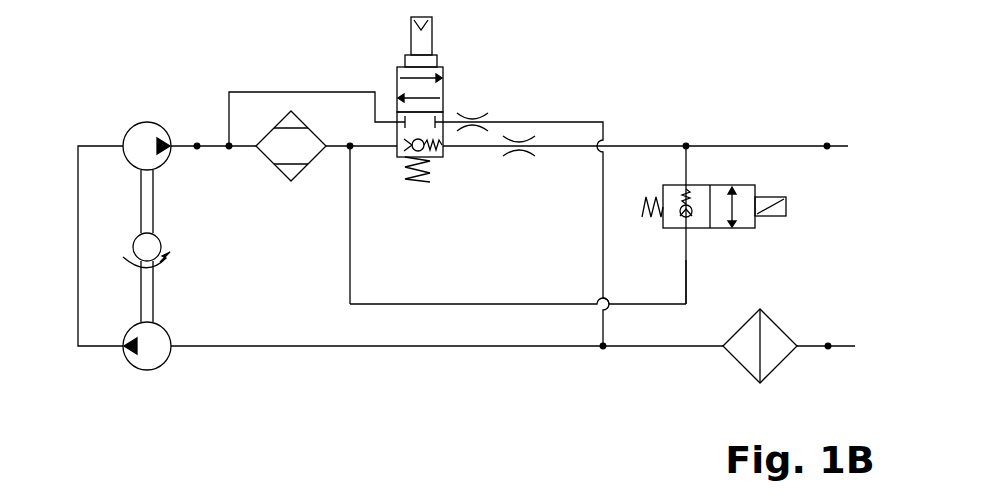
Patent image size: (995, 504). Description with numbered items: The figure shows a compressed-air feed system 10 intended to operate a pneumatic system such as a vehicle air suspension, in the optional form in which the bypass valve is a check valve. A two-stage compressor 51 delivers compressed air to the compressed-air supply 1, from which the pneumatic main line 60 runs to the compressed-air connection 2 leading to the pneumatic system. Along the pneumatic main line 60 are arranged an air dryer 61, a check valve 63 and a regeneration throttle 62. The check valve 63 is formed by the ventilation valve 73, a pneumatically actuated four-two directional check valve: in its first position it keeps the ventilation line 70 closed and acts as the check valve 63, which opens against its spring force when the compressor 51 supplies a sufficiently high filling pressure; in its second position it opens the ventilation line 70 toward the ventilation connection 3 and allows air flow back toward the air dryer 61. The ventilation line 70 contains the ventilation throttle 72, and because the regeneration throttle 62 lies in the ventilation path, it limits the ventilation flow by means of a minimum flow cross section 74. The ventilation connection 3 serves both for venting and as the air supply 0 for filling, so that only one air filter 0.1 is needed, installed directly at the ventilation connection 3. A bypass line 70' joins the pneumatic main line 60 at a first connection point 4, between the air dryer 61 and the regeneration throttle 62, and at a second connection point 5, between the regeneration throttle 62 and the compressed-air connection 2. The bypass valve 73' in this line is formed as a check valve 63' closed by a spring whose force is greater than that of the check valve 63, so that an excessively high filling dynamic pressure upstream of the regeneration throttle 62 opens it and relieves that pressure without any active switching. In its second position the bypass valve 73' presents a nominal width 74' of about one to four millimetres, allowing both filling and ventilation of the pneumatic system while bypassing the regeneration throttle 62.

The compressed-air feed system 10 is at (133, 60).
The two-stage compressor 51 is at (131, 239).
The compressed-air supply 1 is at (197, 143).
The pneumatic main line 60 is at (245, 148).
The air dryer 61 is at (263, 160).
The first connection point 4 is at (350, 143).
The check valve 63 is at (412, 154).
The ventilation valve 73 is at (402, 49).
The ventilation throttle 72 is at (472, 116).
The regeneration throttle 62 is at (518, 154).
The ventilation line 70 is at (526, 234).
The minimum flow cross section 74 is at (518, 283).
The second connection point 5 is at (686, 143).
The check valve 63' is at (683, 230).
The bypass valve 73' is at (749, 154).
The bypass line 70' is at (727, 266).
The nominal width 74' is at (733, 282).
The compressed-air connection 2 is at (827, 143).
The ventilation connection 3 is at (603, 350).
The air supply 0 is at (828, 342).
The air filter 0.1 is at (780, 360).